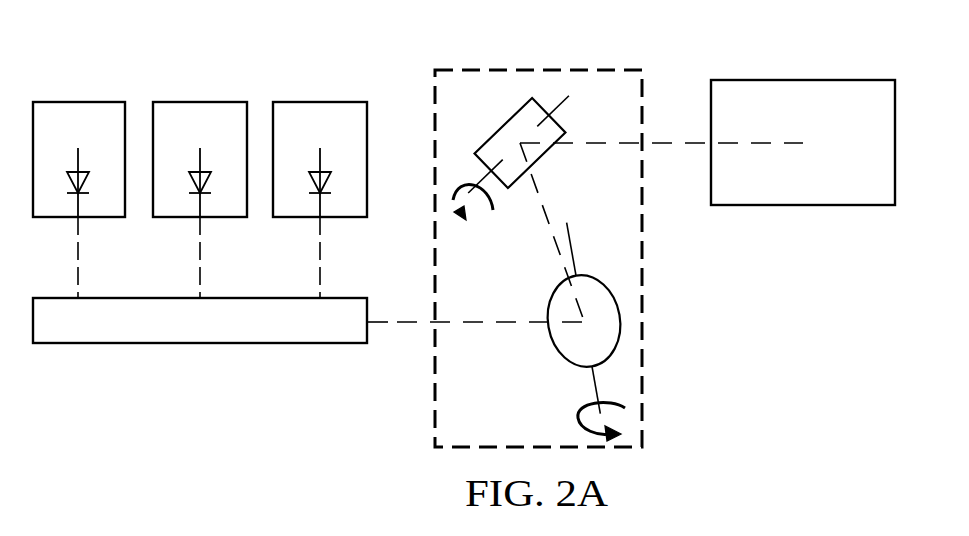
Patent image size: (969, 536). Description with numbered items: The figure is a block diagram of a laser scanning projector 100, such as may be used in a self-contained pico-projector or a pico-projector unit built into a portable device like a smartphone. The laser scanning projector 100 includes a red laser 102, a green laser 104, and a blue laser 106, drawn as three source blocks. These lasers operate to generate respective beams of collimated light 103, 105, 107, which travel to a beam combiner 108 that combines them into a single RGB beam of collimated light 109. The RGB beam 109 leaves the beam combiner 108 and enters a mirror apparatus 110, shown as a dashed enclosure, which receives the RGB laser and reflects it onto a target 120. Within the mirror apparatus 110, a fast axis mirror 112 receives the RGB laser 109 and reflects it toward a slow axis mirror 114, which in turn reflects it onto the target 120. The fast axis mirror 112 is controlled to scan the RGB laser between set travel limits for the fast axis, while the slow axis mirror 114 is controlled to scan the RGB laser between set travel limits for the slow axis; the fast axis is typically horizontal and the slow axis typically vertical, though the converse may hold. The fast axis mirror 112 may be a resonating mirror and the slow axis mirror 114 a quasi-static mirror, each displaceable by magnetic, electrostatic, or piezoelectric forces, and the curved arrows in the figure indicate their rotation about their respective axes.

The laser scanning projector 100 is at (752, 330).
The red laser 102 is at (68, 102).
The beam of collimated light 103 is at (78, 260).
The green laser 104 is at (190, 102).
The beam of collimated light 105 is at (200, 260).
The blue laser 106 is at (310, 102).
The beam of collimated light 107 is at (320, 260).
The beam combiner 108 is at (182, 343).
The RGB beam of collimated light 109 is at (402, 322).
The mirror apparatus 110 is at (612, 62).
The fast axis mirror 112 is at (560, 352).
The slow axis mirror 114 is at (505, 125).
The target 120 is at (802, 80).